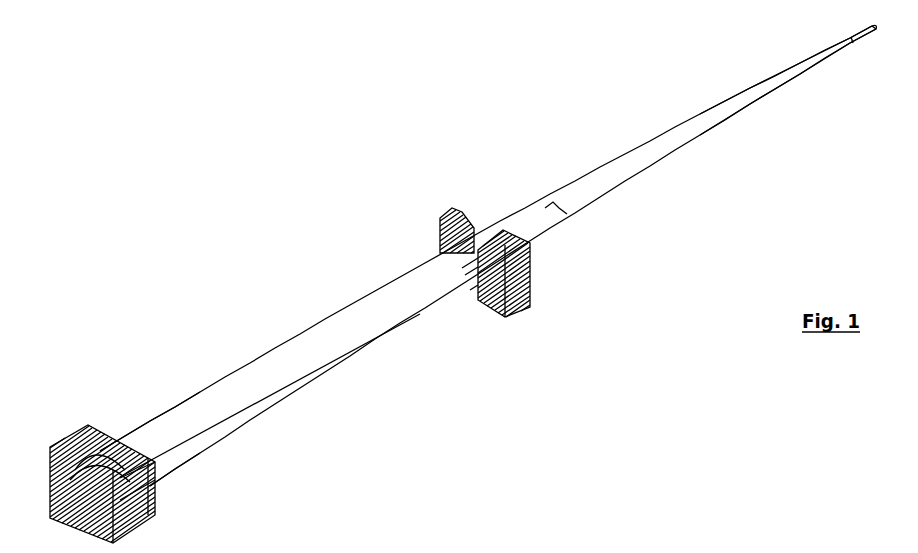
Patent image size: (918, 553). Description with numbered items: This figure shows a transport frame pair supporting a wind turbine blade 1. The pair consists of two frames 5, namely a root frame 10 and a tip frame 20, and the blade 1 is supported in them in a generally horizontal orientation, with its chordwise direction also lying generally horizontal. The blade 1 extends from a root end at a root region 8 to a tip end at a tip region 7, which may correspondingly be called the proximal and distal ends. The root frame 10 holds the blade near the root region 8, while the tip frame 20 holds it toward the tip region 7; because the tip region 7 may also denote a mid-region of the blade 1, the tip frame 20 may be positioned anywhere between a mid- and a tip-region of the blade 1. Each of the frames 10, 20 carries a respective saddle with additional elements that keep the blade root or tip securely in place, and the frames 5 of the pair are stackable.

The wind turbine blade 1 is at (225, 290).
The frames 5 is at (499, 368).
The tip region 7 is at (595, 193).
The root region 8 is at (148, 440).
The root frame 10 is at (72, 413).
The tip frame 20 is at (455, 188).